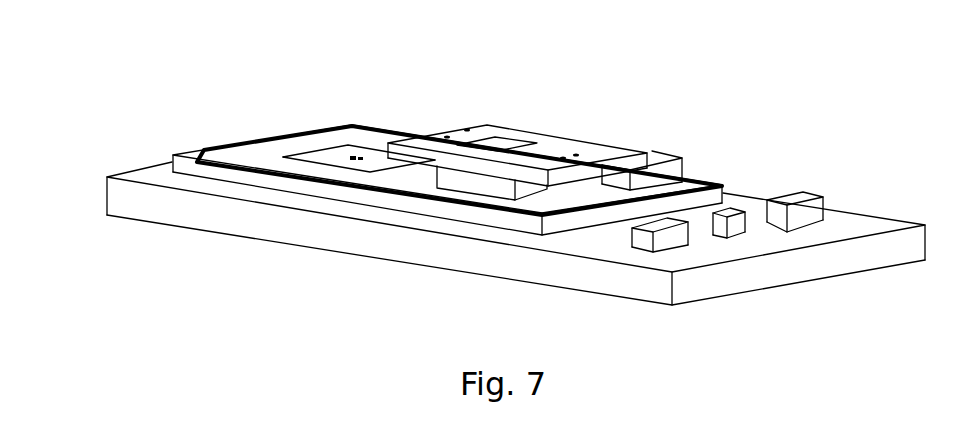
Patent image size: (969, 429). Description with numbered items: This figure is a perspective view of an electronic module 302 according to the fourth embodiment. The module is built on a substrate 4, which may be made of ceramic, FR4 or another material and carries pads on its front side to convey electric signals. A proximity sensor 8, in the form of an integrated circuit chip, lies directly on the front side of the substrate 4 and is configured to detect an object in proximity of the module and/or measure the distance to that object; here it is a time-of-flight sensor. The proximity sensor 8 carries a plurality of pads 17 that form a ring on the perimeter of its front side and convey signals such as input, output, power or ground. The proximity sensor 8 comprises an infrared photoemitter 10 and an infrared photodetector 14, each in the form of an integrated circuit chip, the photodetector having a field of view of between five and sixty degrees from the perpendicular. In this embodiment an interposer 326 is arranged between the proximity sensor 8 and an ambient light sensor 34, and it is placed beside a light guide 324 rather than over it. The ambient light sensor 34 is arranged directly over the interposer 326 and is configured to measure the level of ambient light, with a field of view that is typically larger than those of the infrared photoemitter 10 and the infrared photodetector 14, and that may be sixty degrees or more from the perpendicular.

The electronic module 302 is at (87, 123).
The substrate 4 is at (288, 226).
The proximity sensor 8 is at (258, 160).
The pads 17 is at (380, 128).
The infrared photodetector 14 is at (330, 158).
The ambient light sensor 34 is at (447, 142).
The interposer 326 is at (467, 184).
The light guide 324 is at (660, 172).
The infrared photoemitter 10 is at (730, 212).